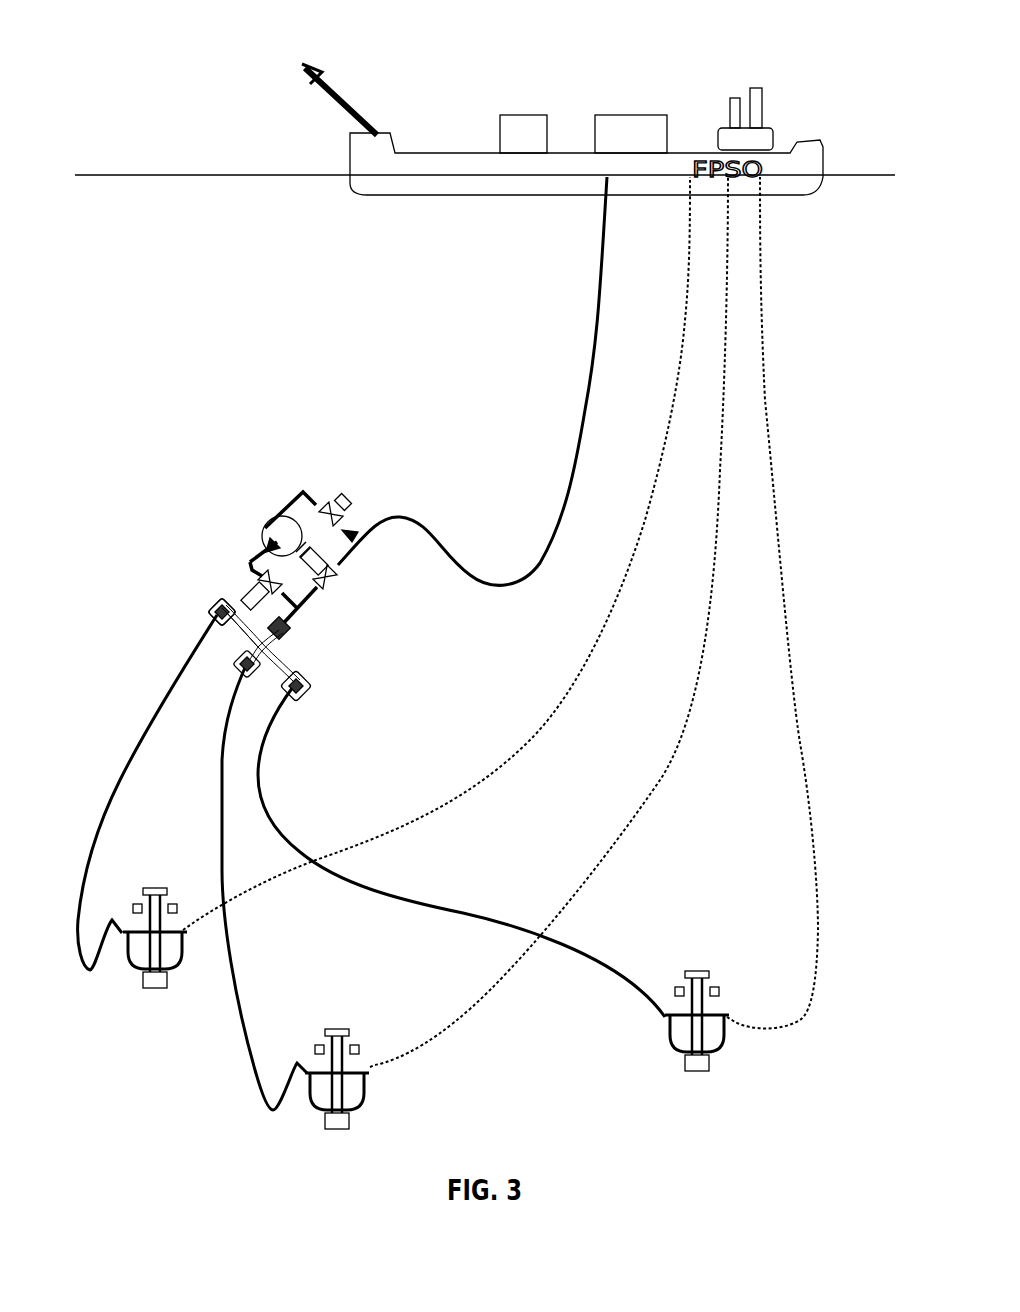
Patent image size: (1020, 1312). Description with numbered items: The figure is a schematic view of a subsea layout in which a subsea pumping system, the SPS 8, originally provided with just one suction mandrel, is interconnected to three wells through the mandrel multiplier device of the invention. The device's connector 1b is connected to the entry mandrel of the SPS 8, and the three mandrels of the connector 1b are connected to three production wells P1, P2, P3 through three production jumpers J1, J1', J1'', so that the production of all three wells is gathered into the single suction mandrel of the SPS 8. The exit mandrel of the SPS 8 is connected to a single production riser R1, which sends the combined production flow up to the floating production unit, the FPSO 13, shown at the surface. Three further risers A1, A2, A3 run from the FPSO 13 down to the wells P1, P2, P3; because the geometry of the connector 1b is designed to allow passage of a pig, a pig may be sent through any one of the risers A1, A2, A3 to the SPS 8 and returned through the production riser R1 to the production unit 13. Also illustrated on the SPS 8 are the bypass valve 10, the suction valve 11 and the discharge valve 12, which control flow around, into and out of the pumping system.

The FPSO 13 is at (594, 115).
The SPS 8 is at (263, 525).
The discharge valve 12 is at (337, 492).
The suction valve 11 is at (243, 587).
The bypass valve 10 is at (330, 563).
The connector 1b is at (247, 640).
The production riser R1 is at (582, 413).
The production jumper J1 is at (134, 792).
The production jumper J1'' is at (289, 886).
The production jumper J1' is at (461, 852).
The riser A1 is at (550, 717).
The riser A2 is at (802, 753).
The riser A3 is at (637, 817).
The production well P1 is at (152, 967).
The production well P2 is at (721, 1029).
The production well P3 is at (359, 1081).